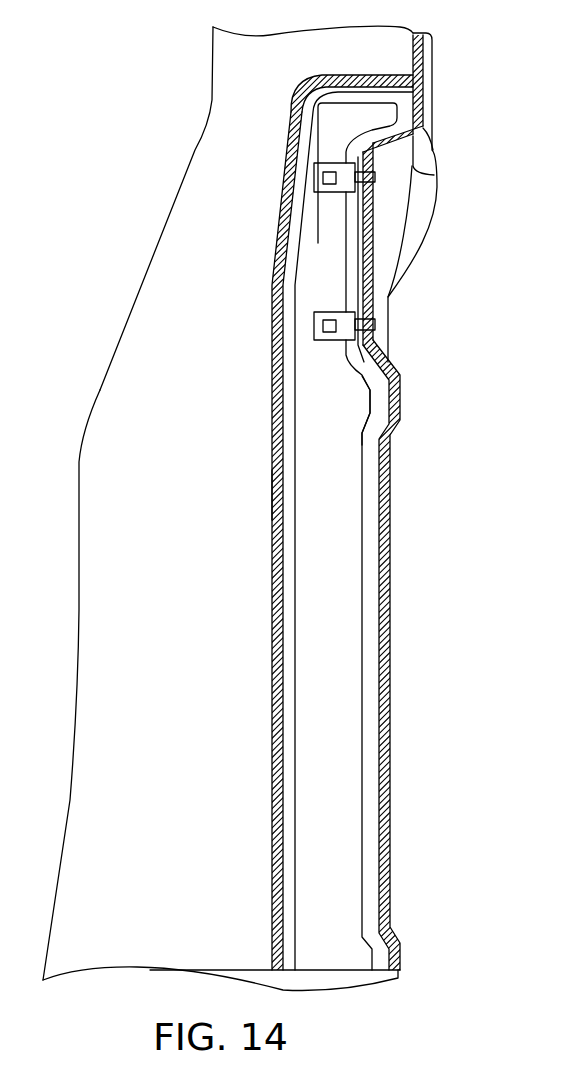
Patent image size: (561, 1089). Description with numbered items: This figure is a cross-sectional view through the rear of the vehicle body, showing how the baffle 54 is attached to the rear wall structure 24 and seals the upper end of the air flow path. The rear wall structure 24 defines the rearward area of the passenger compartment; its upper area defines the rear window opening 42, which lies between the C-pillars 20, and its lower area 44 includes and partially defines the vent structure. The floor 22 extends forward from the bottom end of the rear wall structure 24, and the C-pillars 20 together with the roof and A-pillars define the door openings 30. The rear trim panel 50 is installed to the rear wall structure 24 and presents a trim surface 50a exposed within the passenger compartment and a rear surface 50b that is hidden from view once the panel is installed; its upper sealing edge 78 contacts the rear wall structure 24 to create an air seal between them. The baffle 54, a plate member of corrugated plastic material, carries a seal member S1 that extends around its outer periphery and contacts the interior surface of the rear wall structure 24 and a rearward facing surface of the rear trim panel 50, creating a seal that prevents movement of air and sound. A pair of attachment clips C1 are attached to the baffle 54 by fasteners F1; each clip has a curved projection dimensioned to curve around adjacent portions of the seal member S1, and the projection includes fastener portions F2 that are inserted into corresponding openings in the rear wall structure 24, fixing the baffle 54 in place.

The C-pillar 20 is at (246, 157).
The floor 22 is at (243, 968).
The rear wall structure 24 is at (372, 257).
The door opening 30 is at (146, 277).
The rear window opening 42 is at (418, 63).
The lower area 44 is at (397, 368).
The rear trim panel 50 is at (277, 662).
The trim surface 50a is at (272, 495).
The rear surface 50b is at (283, 535).
The baffle 54 is at (330, 602).
The upper sealing edge 78 is at (380, 75).
The seal member S1 is at (380, 405).
The fastener F1 is at (320, 362).
The fastener portion F2 is at (368, 178).
The attachment clip C1 is at (325, 312).